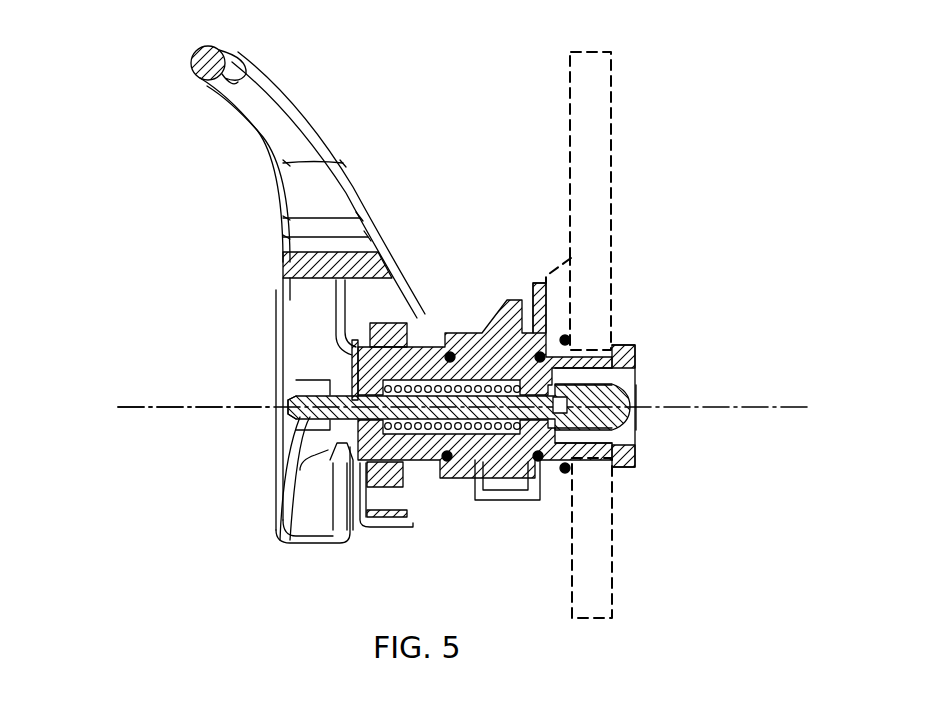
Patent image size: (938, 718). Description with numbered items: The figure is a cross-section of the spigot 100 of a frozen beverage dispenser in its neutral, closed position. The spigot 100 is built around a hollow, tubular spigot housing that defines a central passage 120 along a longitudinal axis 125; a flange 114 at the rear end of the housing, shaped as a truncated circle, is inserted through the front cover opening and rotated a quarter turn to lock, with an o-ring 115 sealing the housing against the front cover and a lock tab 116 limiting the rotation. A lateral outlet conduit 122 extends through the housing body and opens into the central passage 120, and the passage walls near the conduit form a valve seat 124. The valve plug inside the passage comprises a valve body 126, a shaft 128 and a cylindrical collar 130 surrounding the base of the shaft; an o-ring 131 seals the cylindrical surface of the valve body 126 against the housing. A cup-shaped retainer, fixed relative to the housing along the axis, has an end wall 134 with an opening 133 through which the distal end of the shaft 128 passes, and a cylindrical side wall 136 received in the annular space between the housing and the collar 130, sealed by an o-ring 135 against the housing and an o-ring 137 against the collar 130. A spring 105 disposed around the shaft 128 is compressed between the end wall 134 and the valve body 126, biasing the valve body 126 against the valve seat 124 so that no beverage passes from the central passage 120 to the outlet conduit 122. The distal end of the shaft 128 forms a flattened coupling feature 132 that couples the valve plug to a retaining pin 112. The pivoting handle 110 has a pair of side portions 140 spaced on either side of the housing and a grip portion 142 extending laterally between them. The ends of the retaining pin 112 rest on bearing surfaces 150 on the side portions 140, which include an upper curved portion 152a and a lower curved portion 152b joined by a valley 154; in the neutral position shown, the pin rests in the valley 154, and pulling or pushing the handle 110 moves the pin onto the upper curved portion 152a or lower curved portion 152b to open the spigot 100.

The spigot 100 is at (110, 156).
The spring 105 is at (418, 387).
The handle 110 is at (352, 142).
The retaining pin 112 is at (300, 388).
The flange 114 is at (636, 352).
The o-ring 115 is at (572, 338).
The lock tab 116 is at (539, 292).
The central passage 120 is at (648, 425).
The outlet conduit 122 is at (510, 500).
The valve seat 124 is at (600, 383).
The longitudinal axis 125 is at (140, 407).
The valve body 126 is at (600, 436).
The shaft 128 is at (360, 470).
The collar 130 is at (512, 375).
The o-ring 131 is at (545, 465).
The coupling feature 132 is at (287, 413).
The opening 133 is at (342, 378).
The end wall 134 is at (318, 470).
The o-ring 135 is at (450, 462).
The side wall 136 is at (412, 485).
The o-ring 137 is at (460, 376).
The side portions 140 is at (360, 212).
The grip portion 142 is at (200, 62).
The bearing surfaces 150 is at (287, 463).
The upper curved portion 152a is at (305, 350).
The lower curved portion 152b is at (290, 470).
The valley 154 is at (300, 373).